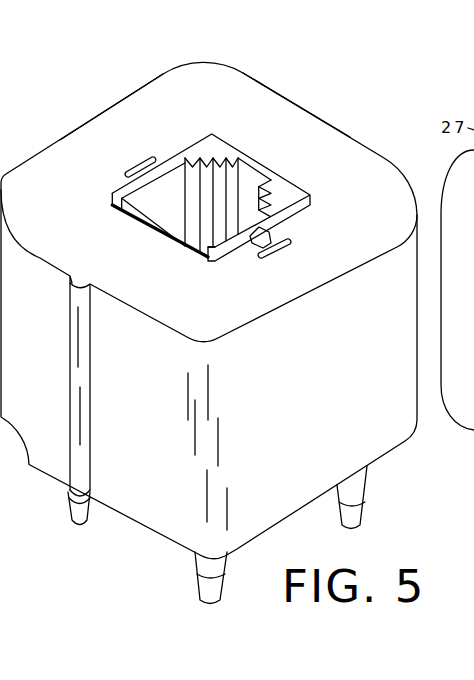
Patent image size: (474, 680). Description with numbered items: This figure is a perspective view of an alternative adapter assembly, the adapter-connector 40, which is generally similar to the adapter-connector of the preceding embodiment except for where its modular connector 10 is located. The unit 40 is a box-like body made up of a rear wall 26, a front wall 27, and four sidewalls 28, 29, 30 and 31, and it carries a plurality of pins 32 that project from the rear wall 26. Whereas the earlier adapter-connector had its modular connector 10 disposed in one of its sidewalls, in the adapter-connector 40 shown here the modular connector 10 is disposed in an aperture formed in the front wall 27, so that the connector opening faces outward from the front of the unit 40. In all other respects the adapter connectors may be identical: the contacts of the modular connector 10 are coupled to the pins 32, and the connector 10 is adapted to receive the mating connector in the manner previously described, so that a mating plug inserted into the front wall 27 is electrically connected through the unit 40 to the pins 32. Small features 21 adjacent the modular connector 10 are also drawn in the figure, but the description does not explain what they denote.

The adapter-connector 40 is at (220, 311).
The rear wall 26 is at (388, 455).
The front wall 27 is at (224, 111).
The sidewall 28 is at (325, 411).
The sidewall 29 is at (312, 113).
The sidewall 30 is at (121, 103).
The sidewall 31 is at (155, 410).
The pins 32 is at (88, 510).
The modular connector 10 is at (222, 153).
The locating tabs 21 is at (127, 162).